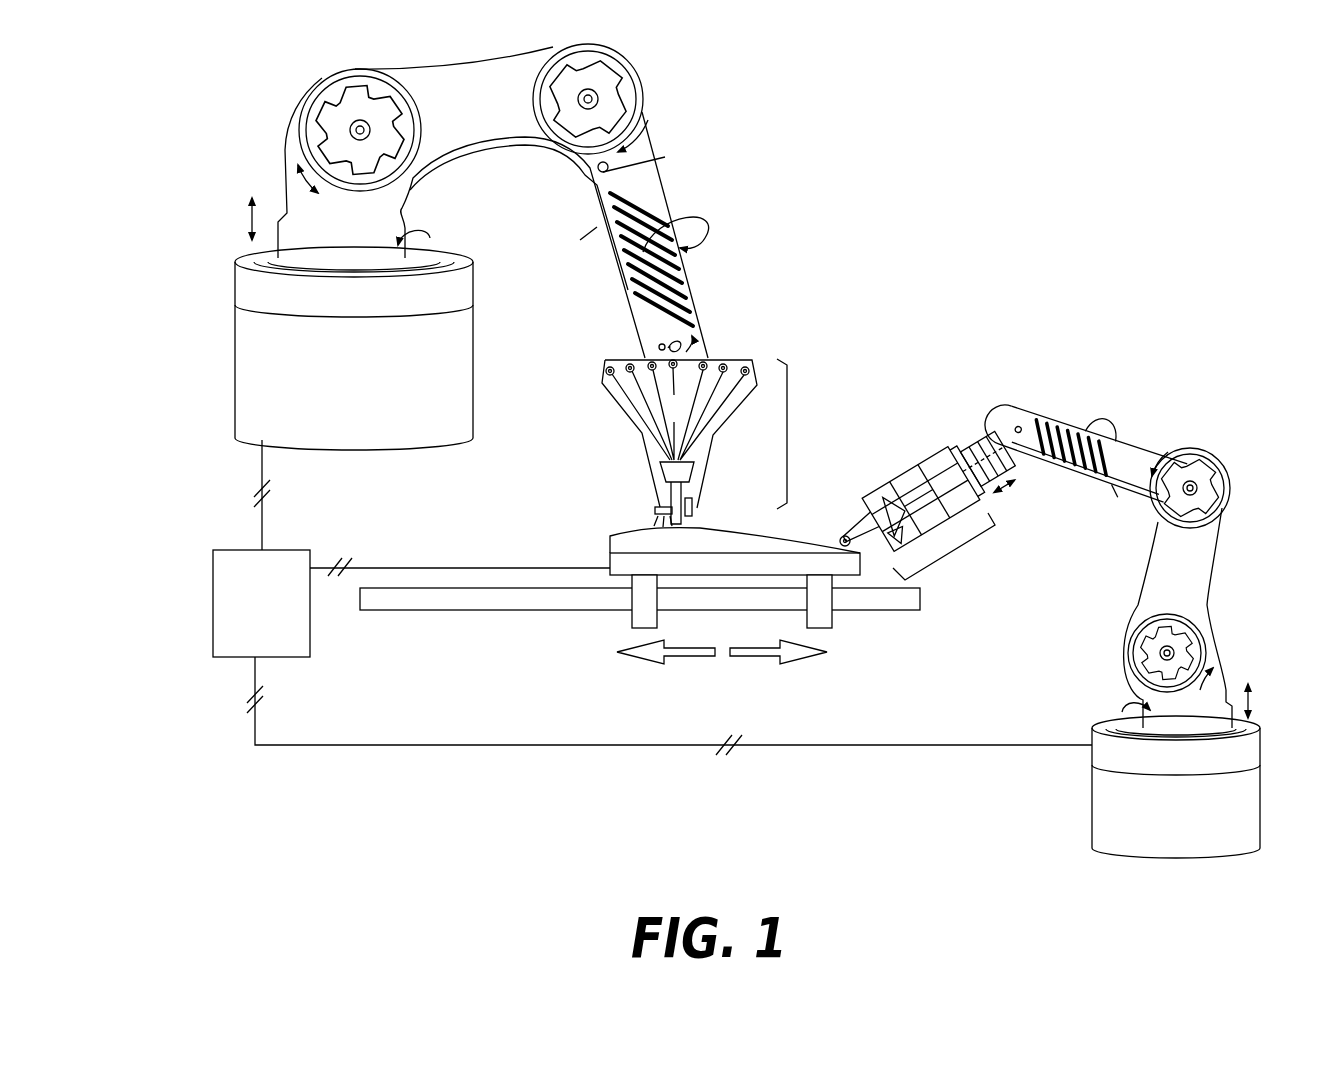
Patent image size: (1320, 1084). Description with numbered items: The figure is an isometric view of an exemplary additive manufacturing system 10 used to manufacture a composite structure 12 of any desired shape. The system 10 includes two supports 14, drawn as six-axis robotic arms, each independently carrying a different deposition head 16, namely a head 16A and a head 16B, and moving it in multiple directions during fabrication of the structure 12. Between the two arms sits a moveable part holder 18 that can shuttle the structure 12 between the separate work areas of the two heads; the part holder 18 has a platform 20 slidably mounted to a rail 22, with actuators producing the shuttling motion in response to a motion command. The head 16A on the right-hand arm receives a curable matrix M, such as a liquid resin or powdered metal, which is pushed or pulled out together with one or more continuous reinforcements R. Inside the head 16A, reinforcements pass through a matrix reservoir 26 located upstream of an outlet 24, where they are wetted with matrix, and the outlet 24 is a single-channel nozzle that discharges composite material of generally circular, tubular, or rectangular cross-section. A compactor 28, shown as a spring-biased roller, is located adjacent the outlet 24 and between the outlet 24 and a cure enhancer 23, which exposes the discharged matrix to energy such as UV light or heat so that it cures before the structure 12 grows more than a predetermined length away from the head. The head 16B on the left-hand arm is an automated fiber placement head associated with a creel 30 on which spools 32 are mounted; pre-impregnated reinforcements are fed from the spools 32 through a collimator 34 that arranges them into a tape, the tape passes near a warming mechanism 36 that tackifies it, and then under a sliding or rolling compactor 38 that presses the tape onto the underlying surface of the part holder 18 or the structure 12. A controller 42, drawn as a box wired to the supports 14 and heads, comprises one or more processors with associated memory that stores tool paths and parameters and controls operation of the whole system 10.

The system 10 is at (188, 736).
The composite structure 12 is at (637, 546).
The support 14 is at (484, 115).
The deposition head 16 is at (834, 324).
The head 16A is at (955, 553).
The head 16B is at (792, 434).
The part holder 18 is at (822, 627).
The platform 20 is at (610, 570).
The rail 22 is at (527, 598).
The cure enhancer 23 is at (870, 505).
The outlet 24 is at (866, 503).
The matrix reservoir 26 is at (912, 490).
The compactor 28 is at (840, 539).
The creel 30 is at (668, 417).
The spool 32 is at (625, 361).
The collimator 34 is at (660, 475).
The warming mechanism 36 is at (654, 511).
The compactor 38 is at (693, 512).
The controller 42 is at (250, 613).
The matrix M is at (933, 493).
The continuous reinforcement R is at (958, 450).